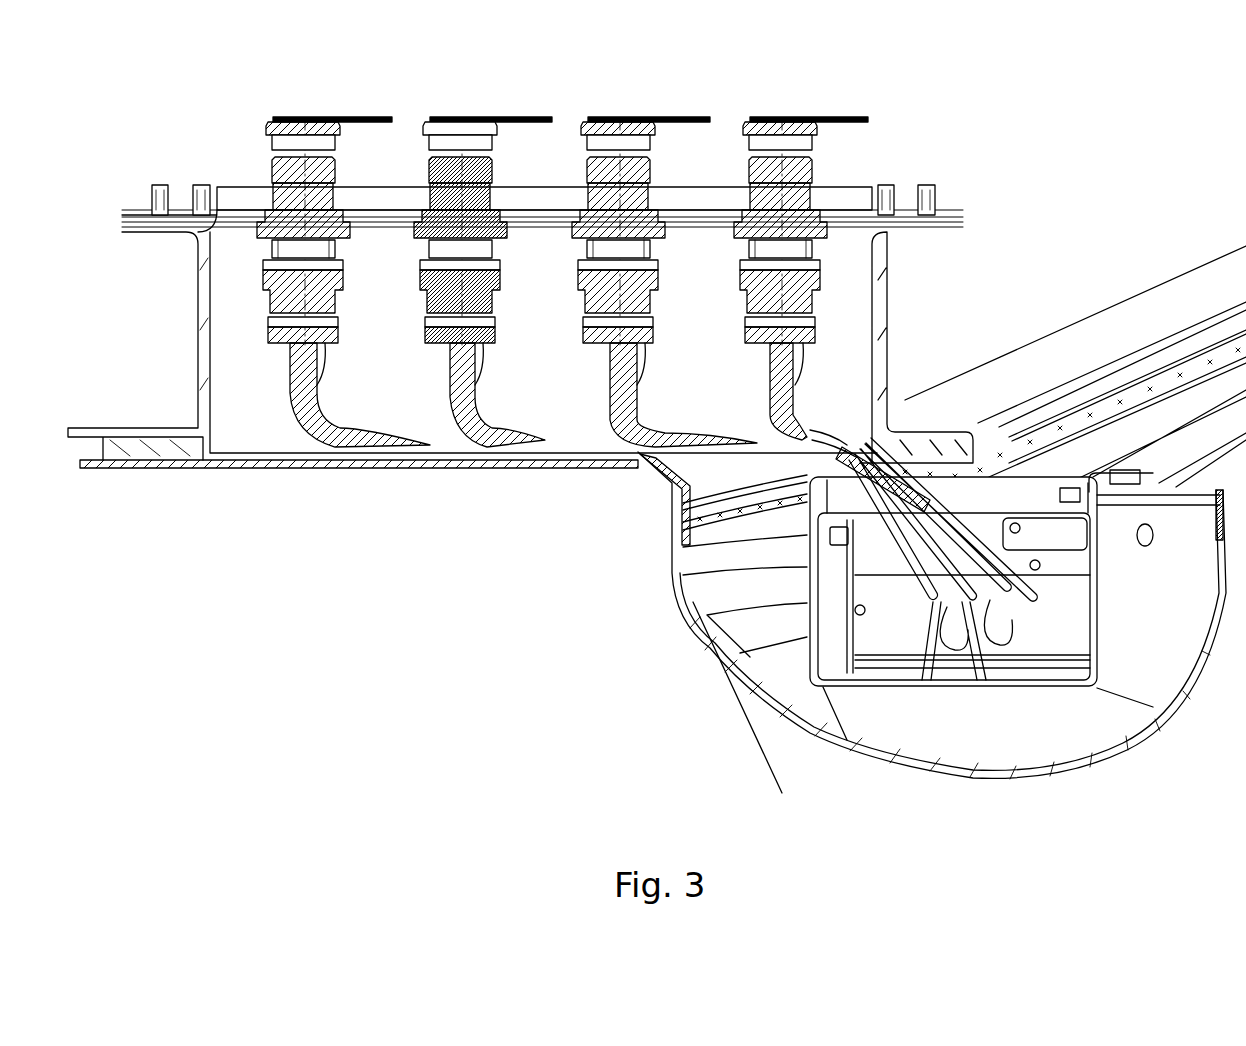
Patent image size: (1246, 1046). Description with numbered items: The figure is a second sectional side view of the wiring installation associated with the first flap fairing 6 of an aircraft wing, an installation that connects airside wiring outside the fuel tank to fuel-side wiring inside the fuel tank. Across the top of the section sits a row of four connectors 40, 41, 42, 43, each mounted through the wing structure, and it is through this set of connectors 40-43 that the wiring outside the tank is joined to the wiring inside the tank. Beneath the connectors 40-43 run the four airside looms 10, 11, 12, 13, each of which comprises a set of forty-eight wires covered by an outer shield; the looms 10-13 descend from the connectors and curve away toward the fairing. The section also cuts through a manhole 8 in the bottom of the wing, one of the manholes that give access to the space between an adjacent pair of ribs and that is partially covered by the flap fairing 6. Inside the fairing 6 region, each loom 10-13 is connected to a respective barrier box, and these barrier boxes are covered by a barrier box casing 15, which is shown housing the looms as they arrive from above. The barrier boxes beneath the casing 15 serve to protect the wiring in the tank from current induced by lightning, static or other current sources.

The flap fairing 6 is at (758, 735).
The manhole 8 is at (272, 485).
The loom 10 is at (370, 425).
The loom 11 is at (493, 413).
The loom 12 is at (647, 420).
The loom 13 is at (797, 417).
The barrier box casing 15 is at (952, 687).
The connector 40 is at (303, 108).
The connector 41 is at (460, 108).
The connector 42 is at (618, 108).
The connector 43 is at (780, 108).